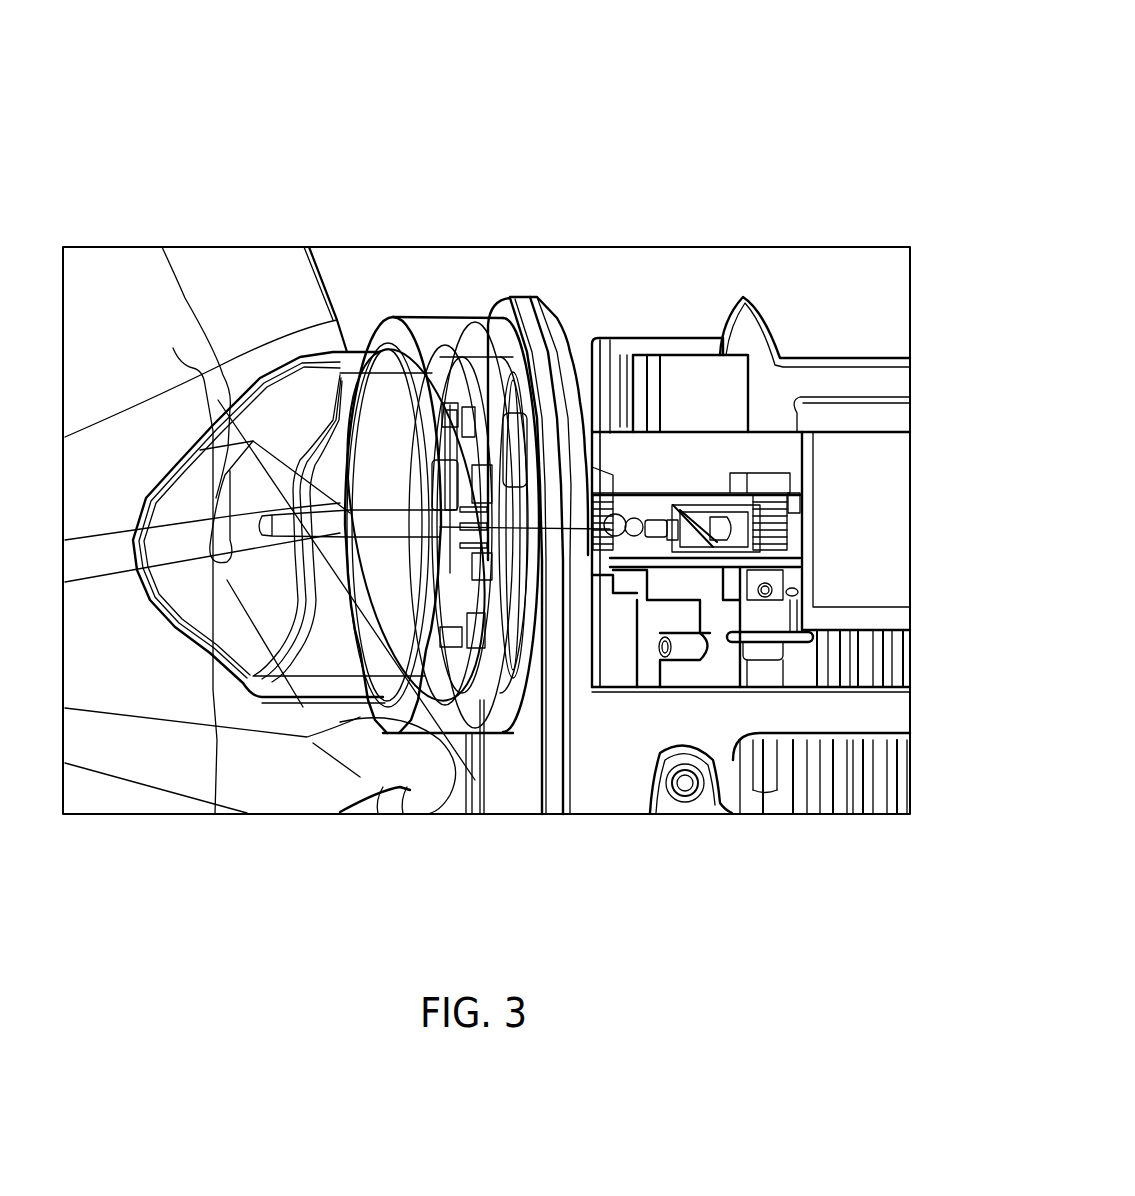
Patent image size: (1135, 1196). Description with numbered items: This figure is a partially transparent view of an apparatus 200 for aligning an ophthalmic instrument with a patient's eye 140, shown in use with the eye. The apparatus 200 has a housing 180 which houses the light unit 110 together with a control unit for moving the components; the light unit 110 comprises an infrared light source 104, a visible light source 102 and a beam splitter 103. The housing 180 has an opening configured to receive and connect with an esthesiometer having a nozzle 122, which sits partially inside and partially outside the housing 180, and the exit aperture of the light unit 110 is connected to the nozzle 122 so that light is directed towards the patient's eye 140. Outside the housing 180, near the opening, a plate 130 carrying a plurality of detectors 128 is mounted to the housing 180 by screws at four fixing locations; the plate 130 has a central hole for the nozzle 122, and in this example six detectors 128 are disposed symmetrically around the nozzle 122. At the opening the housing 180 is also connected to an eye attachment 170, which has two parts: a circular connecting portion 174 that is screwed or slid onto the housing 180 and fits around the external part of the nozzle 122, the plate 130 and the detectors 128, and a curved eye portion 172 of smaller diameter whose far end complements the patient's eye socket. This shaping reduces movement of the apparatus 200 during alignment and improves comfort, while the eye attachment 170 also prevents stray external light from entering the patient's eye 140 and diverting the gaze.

The apparatus 200 is at (703, 128).
The patient's eye 140 is at (173, 348).
The eye portion 172 is at (217, 677).
The nozzle 122 is at (375, 527).
The detectors 128 is at (450, 395).
The connecting portion 174 is at (408, 727).
The eye attachment 170 is at (428, 755).
The plate 130 is at (514, 300).
The housing 180 is at (580, 812).
The visible light source 102 is at (708, 552).
The beam splitter 103 is at (687, 507).
The infrared light source 104 is at (730, 517).
The light unit 110 is at (735, 563).